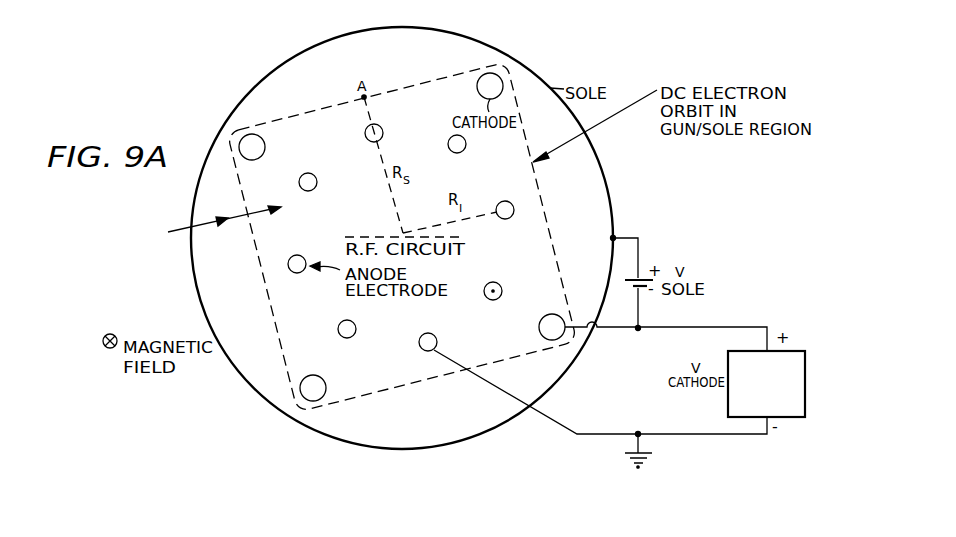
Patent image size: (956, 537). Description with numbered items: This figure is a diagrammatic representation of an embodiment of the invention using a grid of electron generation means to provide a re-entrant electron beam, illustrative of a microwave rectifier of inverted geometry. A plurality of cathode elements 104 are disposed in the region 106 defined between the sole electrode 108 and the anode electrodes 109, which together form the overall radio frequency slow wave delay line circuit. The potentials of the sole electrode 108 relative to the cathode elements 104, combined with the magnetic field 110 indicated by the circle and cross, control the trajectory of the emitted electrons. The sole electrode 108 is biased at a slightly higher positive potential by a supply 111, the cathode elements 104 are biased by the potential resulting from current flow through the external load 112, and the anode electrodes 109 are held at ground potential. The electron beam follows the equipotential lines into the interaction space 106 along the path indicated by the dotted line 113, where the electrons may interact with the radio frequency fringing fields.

The cathode elements 104 is at (265, 147).
The region 106 is at (204, 225).
The sole electrode 108 is at (450, 32).
The anode electrodes 109 is at (317, 185).
The magnetic field 110 is at (115, 335).
The supply 111 is at (634, 286).
The external load 112 is at (789, 418).
The dotted line 113 is at (268, 297).